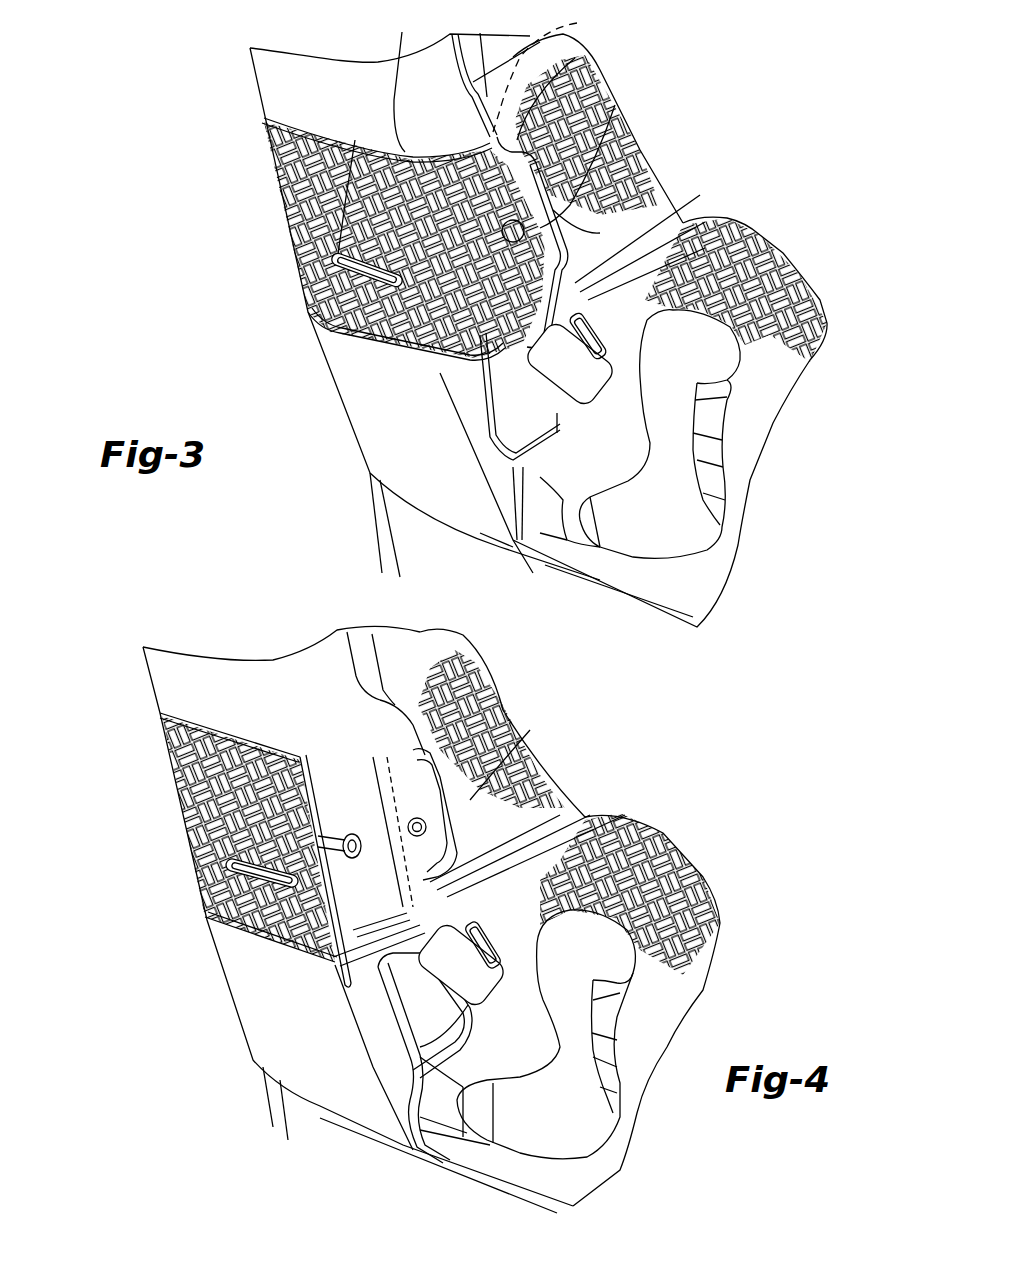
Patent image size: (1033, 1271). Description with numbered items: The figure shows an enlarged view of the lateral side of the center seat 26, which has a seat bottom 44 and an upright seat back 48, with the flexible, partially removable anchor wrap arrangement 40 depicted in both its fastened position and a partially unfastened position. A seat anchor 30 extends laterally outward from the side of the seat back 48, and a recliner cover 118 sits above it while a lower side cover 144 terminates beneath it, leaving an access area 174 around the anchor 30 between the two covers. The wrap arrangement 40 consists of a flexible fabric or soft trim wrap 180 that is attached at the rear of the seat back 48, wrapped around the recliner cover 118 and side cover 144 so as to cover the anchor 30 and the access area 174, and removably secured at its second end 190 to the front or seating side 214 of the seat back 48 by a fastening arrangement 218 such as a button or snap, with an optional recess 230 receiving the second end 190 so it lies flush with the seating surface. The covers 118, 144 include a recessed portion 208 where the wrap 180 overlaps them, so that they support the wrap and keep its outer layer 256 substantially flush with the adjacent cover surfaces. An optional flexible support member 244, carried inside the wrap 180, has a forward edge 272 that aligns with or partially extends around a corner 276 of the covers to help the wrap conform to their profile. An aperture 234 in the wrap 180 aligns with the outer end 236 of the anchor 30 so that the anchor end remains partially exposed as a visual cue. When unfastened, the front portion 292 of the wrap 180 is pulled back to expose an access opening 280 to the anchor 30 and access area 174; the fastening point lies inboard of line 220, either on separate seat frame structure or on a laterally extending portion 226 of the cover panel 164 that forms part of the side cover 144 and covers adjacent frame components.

In FIG. 3, the center seat 26 is at (230, 50).
In FIG. 4, the center seat 26 is at (138, 642).
In FIG. 3, the recliner cover 118 is at (264, 97).
In FIG. 4, the recliner cover 118 is at (164, 682).
In FIG. 3, the corner 276 is at (401, 79).
In FIG. 3, the flexible support member 244 is at (550, 69).
In FIG. 3, the second end 190 is at (567, 80).
In FIG. 3, the front portion 292 is at (604, 140).
In FIG. 3, the seat back 48 is at (634, 146).
In FIG. 4, the seat back 48 is at (536, 761).
In FIG. 3, the recess 230 is at (527, 230).
In FIG. 4, the recess 230 is at (415, 808).
In FIG. 3, the front or seating side 214 is at (595, 236).
In FIG. 3, the seat bottom 44 is at (752, 236).
In FIG. 4, the seat bottom 44 is at (685, 850).
In FIG. 3, the outer layer 256 is at (268, 152).
In FIG. 4, the outer layer 256 is at (195, 748).
In FIG. 3, the flexible wrap 180 is at (292, 178).
In FIG. 4, the flexible wrap 180 is at (210, 772).
In FIG. 3, the aperture 234 is at (355, 140).
In FIG. 3, the outer end 236 is at (345, 262).
In FIG. 4, the outer end 236 is at (235, 872).
In FIG. 3, the seat anchor 30 is at (338, 330).
In FIG. 4, the seat anchor 30 is at (207, 918).
In FIG. 3, the anchor wrap arrangement 40 is at (358, 338).
In FIG. 4, the anchor wrap arrangement 40 is at (204, 831).
In FIG. 3, the lower side cover 144 is at (355, 418).
In FIG. 4, the lower side cover 144 is at (253, 1022).
In FIG. 3, the fastening arrangement 218 is at (642, 337).
In FIG. 4, the fastening arrangement 218 is at (310, 885).
In FIG. 3, the forward edge 272 is at (440, 385).
In FIG. 4, the recessed portion 208 is at (349, 771).
In FIG. 4, the access opening 280 is at (340, 755).
In FIG. 4, the line 220 is at (428, 822).
In FIG. 4, the laterally extending portion 226 is at (430, 806).
In FIG. 4, the cover panel 164 is at (357, 808).
In FIG. 4, the access area 174 is at (478, 922).